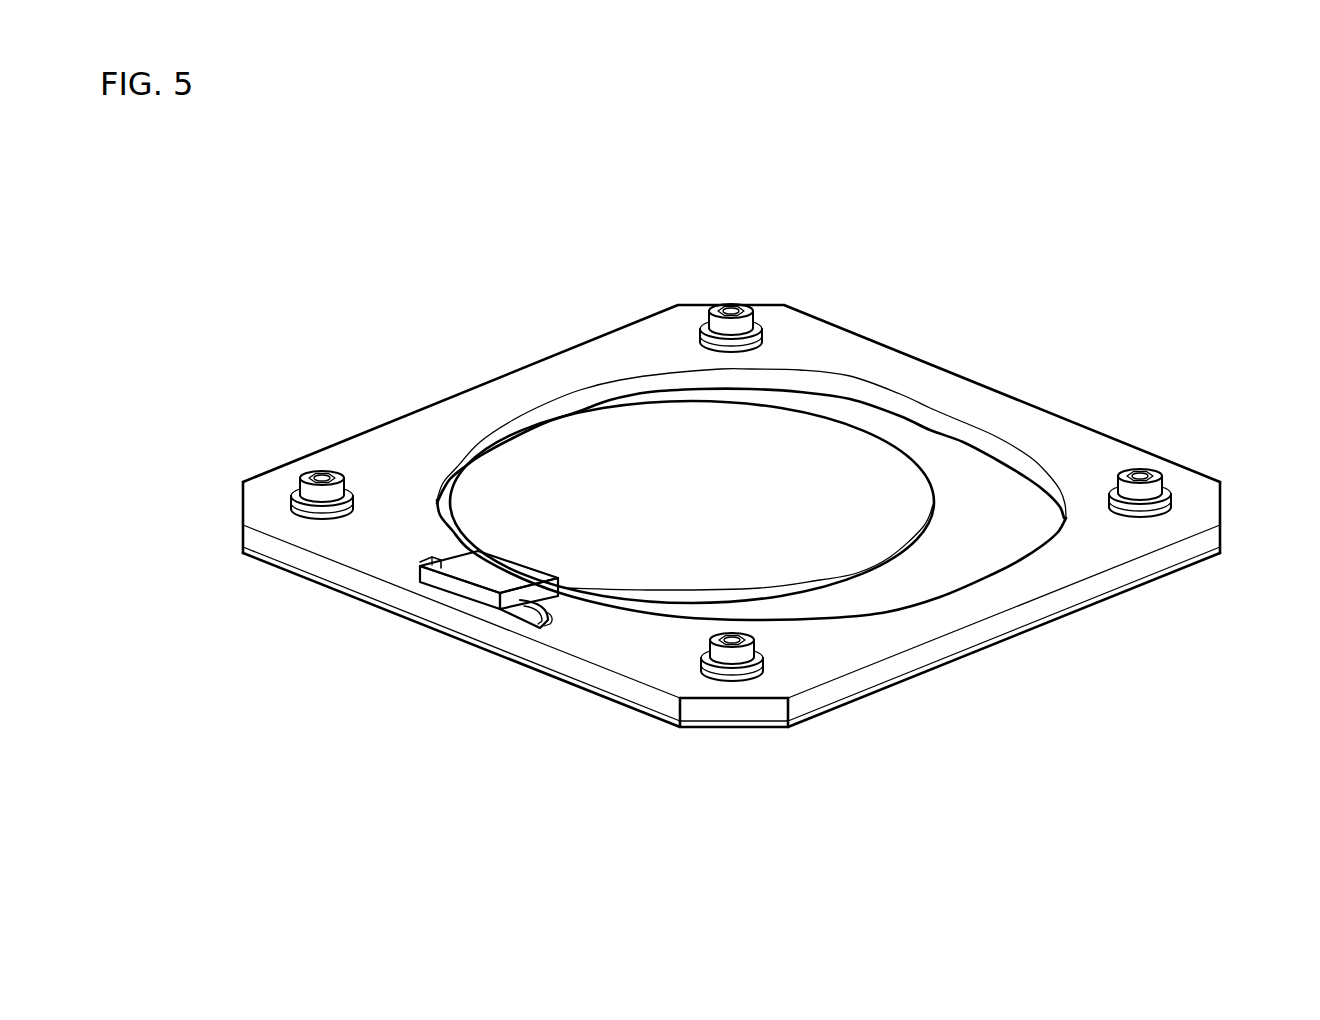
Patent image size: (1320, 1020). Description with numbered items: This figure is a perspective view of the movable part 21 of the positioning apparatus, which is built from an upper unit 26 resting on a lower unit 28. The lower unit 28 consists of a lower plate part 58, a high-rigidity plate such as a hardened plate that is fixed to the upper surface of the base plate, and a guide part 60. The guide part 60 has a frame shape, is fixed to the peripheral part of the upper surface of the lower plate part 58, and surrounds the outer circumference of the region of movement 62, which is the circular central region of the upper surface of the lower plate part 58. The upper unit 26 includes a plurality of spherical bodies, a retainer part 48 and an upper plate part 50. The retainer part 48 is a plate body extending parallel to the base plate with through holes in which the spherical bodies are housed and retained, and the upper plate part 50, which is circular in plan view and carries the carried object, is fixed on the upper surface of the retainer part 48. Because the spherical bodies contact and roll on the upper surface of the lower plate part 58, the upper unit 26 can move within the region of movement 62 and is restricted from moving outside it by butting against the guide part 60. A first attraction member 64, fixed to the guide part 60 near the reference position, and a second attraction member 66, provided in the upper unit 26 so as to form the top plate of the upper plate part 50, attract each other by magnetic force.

The movable part 21 is at (775, 553).
The upper unit 26 is at (634, 418).
The lower unit 28 is at (1226, 532).
The retainer part 48 is at (853, 590).
The upper plate part 50 is at (867, 545).
The lower plate part 58 is at (1184, 574).
The guide part 60 is at (1104, 457).
The region of movement 62 is at (980, 542).
The first attraction member 64 is at (494, 570).
The second attraction member 66 is at (553, 561).